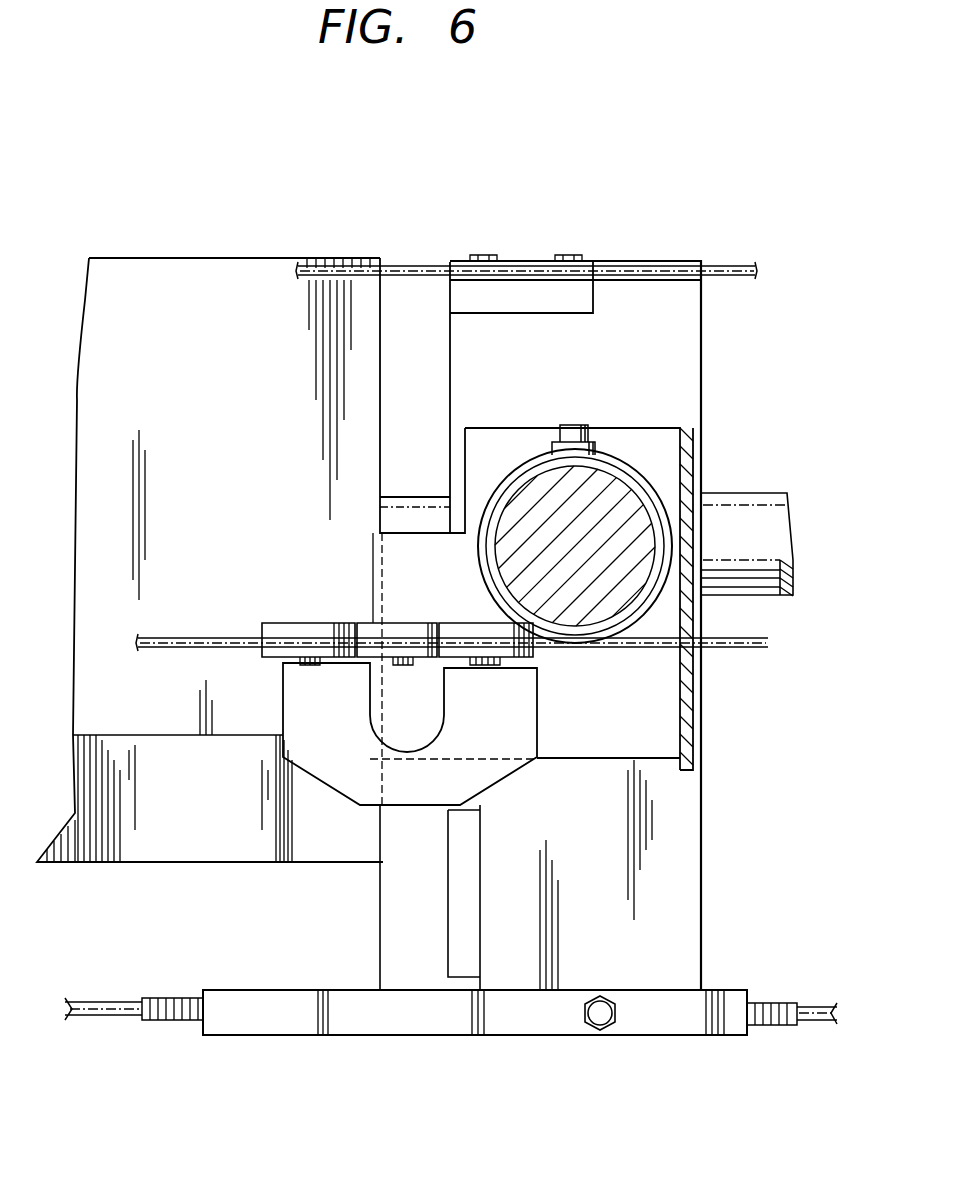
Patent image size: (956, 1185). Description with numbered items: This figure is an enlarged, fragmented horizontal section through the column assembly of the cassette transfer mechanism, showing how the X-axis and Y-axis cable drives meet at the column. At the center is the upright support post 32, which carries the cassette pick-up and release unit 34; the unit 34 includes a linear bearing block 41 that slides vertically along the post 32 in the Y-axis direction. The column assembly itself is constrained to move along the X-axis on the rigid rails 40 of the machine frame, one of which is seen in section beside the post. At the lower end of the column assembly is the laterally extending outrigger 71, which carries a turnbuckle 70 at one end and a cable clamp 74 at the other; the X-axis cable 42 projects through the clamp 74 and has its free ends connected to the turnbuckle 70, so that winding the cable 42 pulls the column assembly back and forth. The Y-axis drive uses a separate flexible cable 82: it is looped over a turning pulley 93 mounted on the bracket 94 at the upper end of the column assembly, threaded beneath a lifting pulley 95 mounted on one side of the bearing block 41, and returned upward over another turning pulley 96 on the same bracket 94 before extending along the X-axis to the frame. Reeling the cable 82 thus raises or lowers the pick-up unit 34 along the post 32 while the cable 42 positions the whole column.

The cassette pick-up and release unit 34 is at (257, 272).
The cable 42 is at (727, 272).
The cable clamp 74 is at (560, 305).
The outrigger 71 is at (682, 362).
The upright support post 32 is at (600, 490).
The linear bearing block 41 is at (660, 430).
The rigid rail 40 is at (715, 497).
The flexible cable 82 is at (230, 637).
The turning pulley 93 is at (312, 623).
The lifting pulley 95 is at (363, 622).
The turning pulley 96 is at (480, 627).
The bracket 94 is at (303, 707).
The turnbuckle 70 is at (493, 1028).